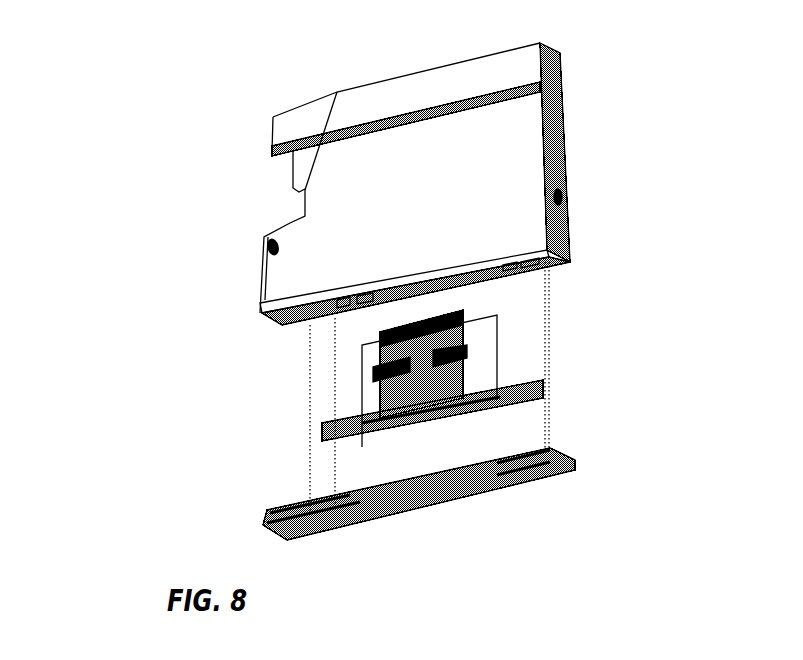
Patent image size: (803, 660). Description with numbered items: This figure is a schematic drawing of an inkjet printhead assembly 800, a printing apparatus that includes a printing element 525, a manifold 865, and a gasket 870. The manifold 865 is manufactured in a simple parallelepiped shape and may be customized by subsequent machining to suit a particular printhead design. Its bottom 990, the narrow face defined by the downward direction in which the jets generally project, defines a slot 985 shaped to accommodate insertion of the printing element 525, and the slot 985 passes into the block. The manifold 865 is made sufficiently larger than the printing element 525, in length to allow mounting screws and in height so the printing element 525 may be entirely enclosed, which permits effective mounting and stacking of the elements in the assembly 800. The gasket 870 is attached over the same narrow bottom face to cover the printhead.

The inkjet printhead assembly 800 is at (233, 87).
The manifold 865 is at (247, 267).
The printing element 525 is at (370, 392).
The gasket 870 is at (255, 522).
The bottom 990 is at (548, 258).
The slot 985 is at (475, 275).